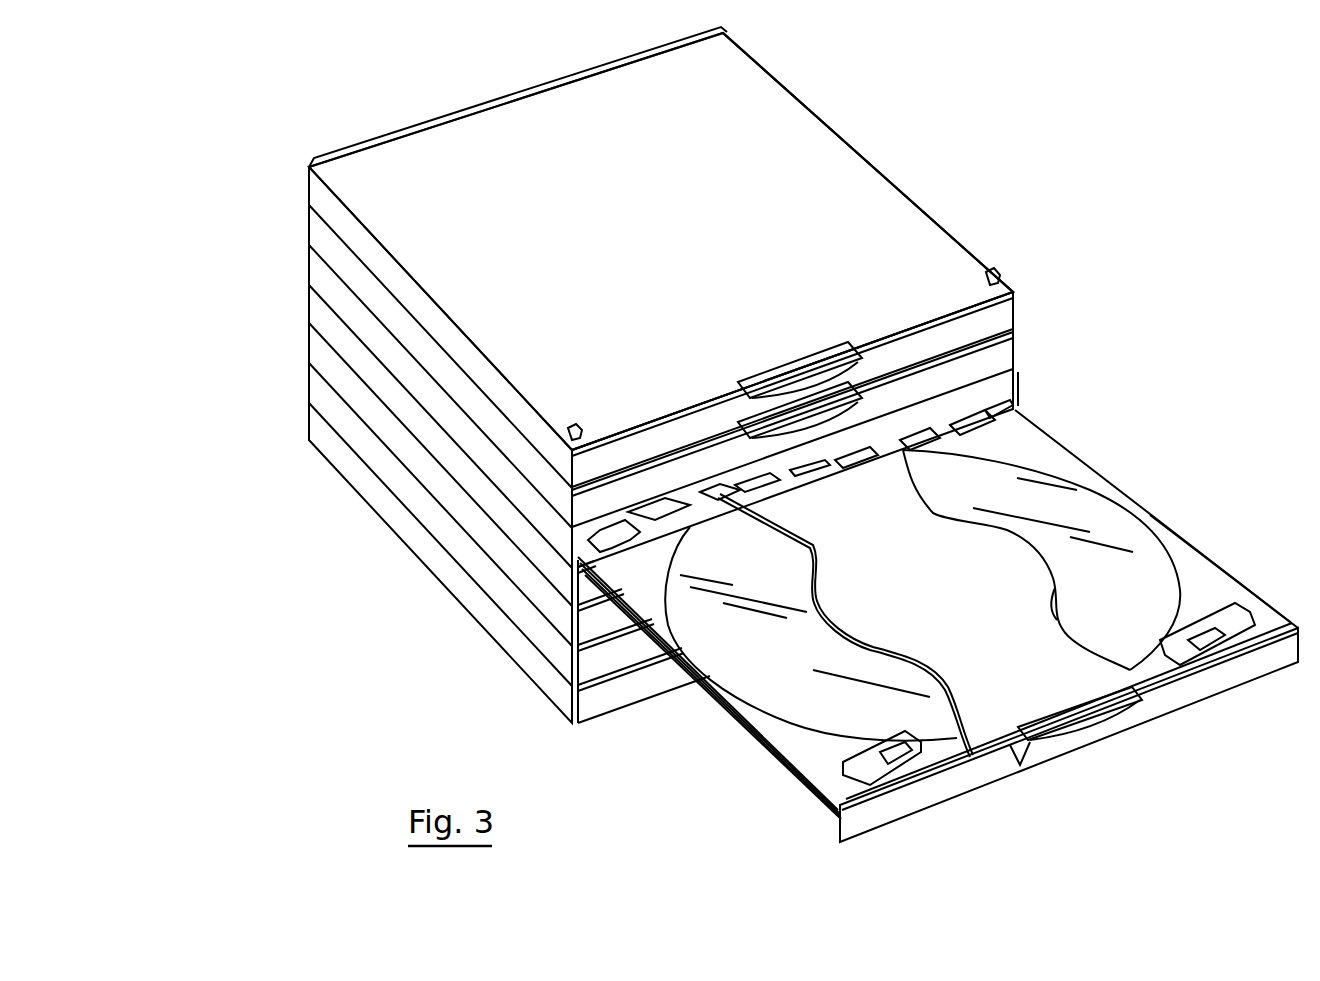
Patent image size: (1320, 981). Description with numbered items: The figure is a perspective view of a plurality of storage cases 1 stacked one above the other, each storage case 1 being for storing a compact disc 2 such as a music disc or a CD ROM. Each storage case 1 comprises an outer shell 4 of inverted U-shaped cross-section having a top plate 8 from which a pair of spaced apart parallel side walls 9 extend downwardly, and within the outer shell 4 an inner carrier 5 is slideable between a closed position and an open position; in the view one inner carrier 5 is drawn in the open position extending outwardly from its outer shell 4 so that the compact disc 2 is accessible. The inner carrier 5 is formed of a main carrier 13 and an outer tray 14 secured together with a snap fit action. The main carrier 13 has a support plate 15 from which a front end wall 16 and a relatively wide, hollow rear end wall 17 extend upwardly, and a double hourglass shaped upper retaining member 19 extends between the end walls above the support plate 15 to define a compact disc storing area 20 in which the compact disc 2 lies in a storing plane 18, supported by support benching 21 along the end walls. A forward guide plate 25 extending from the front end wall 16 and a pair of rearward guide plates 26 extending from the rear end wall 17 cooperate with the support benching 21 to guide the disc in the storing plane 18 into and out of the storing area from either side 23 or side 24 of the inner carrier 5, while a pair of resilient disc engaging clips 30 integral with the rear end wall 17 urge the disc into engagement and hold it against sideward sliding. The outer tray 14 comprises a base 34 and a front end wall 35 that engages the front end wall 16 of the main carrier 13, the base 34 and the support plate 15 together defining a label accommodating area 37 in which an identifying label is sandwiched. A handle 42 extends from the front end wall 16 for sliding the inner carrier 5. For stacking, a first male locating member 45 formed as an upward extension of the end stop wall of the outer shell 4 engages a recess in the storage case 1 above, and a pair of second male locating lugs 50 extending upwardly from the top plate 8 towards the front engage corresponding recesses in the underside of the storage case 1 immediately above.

The storage case 1 is at (298, 220).
The compact disc 2 is at (1172, 552).
The outer shell 4 is at (745, 98).
The inner carrier 5 is at (1047, 456).
The top plate 8 is at (800, 136).
The side walls 9 is at (318, 198).
The main carrier 13 is at (792, 758).
The outer tray 14 is at (900, 806).
The support plate 15 is at (778, 740).
The front end wall 16 is at (1012, 747).
The rear end wall 17 is at (645, 505).
The storing plane 18 is at (1108, 506).
The upper retaining member 19 is at (797, 517).
The compact disc storing area 20 is at (819, 748).
The support benching 21 is at (660, 527).
The side of the inner carrier 23 is at (1222, 590).
The side of the inner carrier 24 is at (742, 730).
The forward guide plate 25 is at (1240, 627).
The rearward guide plates 26 is at (988, 411).
The resilient disc engaging clips 30 is at (755, 482).
The base 34 is at (795, 778).
The front end wall 35 is at (980, 777).
The label accommodating area 37 is at (713, 702).
The handle 42 is at (820, 392).
The first male locating member 45 is at (611, 72).
The second male locating lugs 50 is at (990, 270).